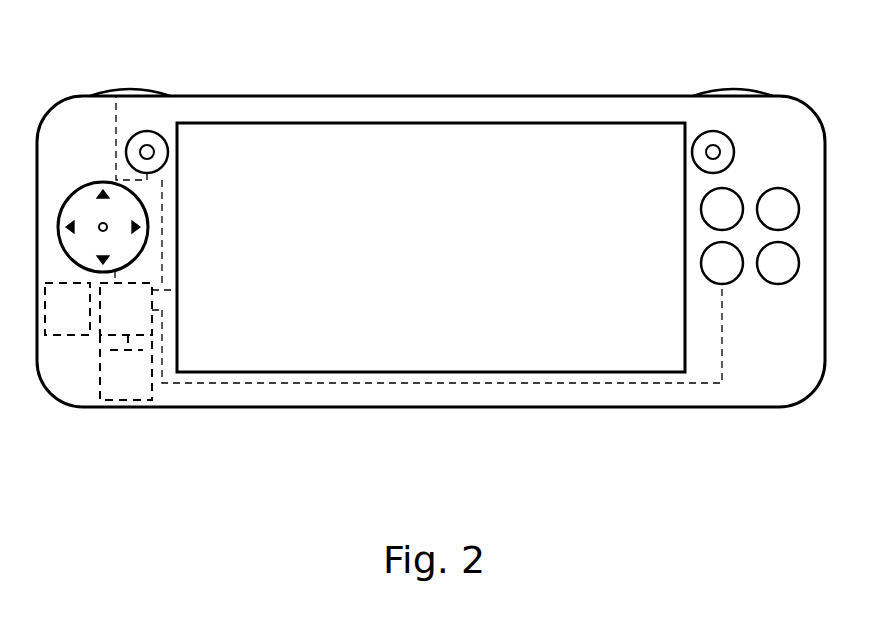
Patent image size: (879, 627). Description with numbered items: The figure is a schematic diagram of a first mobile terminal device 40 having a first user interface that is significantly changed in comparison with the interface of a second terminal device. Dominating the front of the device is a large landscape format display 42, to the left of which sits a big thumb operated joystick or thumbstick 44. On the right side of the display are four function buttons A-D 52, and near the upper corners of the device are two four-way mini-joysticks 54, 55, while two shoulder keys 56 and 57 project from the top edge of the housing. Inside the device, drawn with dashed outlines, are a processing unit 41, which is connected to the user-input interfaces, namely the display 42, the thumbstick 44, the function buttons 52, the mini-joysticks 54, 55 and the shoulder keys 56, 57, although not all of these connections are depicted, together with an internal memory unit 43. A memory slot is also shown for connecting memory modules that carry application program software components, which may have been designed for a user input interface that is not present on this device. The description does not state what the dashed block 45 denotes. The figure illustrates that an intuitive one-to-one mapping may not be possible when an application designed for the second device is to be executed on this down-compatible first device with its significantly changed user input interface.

The first mobile terminal device 40 is at (203, 405).
The processing unit 41 is at (138, 257).
The large landscape format display 42 is at (258, 348).
The internal memory unit 43 is at (411, 342).
The thumb operated joystick 44 is at (61, 214).
The communication unit 45 is at (67, 309).
The four function buttons A-D 52 is at (776, 284).
The 4-way mini-joystick 54 is at (151, 132).
The 4-way mini-joystick 55 is at (706, 140).
The shoulder key 56 is at (125, 87).
The shoulder key 57 is at (735, 87).